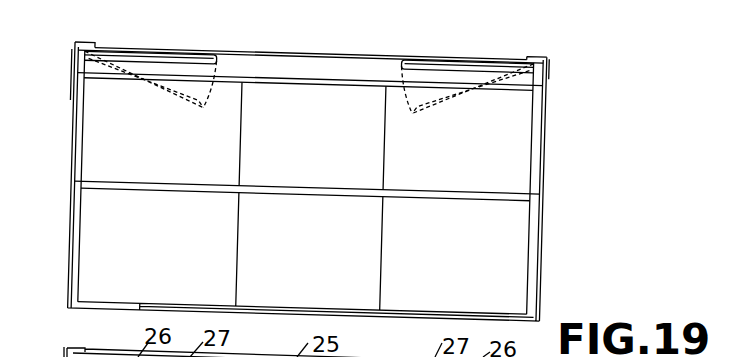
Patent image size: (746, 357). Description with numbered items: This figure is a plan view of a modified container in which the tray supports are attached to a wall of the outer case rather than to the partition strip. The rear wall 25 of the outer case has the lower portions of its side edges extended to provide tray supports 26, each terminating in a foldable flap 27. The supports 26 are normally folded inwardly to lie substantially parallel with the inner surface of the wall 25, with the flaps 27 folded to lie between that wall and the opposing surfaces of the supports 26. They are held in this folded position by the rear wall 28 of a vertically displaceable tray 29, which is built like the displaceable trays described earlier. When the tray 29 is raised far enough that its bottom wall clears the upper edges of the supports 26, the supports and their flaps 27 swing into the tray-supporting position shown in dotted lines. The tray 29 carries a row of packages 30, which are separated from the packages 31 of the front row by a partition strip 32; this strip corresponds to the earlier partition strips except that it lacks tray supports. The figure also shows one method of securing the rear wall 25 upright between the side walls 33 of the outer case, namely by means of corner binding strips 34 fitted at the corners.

The rear wall 25 is at (298, 53).
The tray supports 26 is at (165, 88).
The foldable flaps 27 is at (193, 58).
The rear wall of tray 28 is at (335, 80).
The vertically displaceable tray 29 is at (533, 133).
The packages 30 is at (105, 153).
The packages of front row 31 is at (307, 254).
The partition strip 32 is at (292, 190).
The side walls 33 is at (73, 100).
The corner binding strips 34 is at (79, 42).